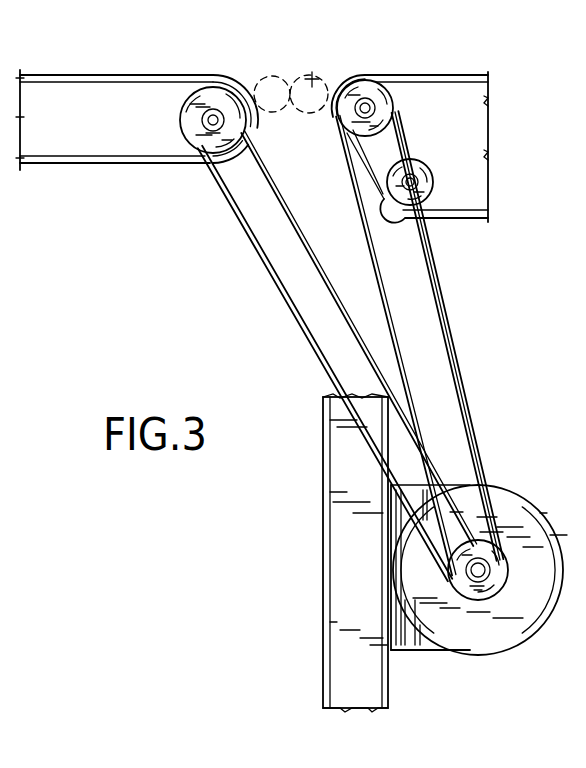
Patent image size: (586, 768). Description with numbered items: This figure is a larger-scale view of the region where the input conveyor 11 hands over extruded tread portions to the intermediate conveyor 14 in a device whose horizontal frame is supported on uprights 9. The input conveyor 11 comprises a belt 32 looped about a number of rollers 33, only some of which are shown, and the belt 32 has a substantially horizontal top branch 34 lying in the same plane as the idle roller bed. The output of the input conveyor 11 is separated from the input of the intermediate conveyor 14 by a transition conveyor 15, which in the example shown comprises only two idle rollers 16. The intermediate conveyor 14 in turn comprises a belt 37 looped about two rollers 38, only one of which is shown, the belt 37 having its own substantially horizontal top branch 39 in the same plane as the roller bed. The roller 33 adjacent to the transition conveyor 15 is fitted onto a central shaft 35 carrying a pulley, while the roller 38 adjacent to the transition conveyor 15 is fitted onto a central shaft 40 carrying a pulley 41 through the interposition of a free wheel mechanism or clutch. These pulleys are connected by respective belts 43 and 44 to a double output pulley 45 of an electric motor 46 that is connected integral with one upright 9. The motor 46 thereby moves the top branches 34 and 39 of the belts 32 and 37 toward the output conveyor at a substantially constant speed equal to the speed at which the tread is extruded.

The uprights 9 is at (340, 607).
The input conveyor 11 is at (437, 116).
The intermediate conveyor 14 is at (114, 90).
The transition conveyor 15 is at (283, 65).
The idle rollers 16 is at (293, 82).
The belt 32 is at (437, 125).
The rollers 33 is at (392, 98).
The top branch 34 is at (490, 100).
The central shaft 35 is at (365, 102).
The belt 37 is at (92, 75).
The rollers 38 is at (173, 127).
The top branch 39 is at (50, 82).
The central shaft 40 is at (214, 112).
The pulley 41 is at (205, 143).
The belt 43 is at (456, 364).
The belt 44 is at (307, 333).
The double output pulley 45 is at (480, 595).
The electric motor 46 is at (522, 616).